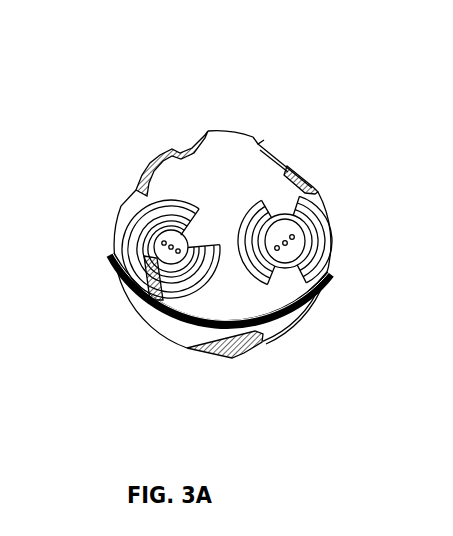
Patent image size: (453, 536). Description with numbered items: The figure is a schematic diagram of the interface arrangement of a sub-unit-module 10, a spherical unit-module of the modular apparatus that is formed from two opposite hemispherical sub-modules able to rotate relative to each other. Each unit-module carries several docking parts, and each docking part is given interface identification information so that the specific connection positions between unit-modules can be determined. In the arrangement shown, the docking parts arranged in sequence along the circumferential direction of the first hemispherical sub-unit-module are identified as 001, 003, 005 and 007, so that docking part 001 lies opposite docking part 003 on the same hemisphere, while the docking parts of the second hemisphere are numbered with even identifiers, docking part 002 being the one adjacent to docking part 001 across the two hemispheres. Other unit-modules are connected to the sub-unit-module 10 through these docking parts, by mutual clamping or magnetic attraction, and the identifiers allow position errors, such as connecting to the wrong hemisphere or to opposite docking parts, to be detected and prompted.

The sub-unit-module 10 is at (255, 53).
The interface identification information of a docking part 001 is at (176, 282).
The interface identification information of a docking part 002 is at (240, 354).
The interface identification information of a docking part 003 is at (285, 241).
The interface identification information of a docking part 005 is at (282, 156).
The interface identification information of a docking part 007 is at (152, 165).